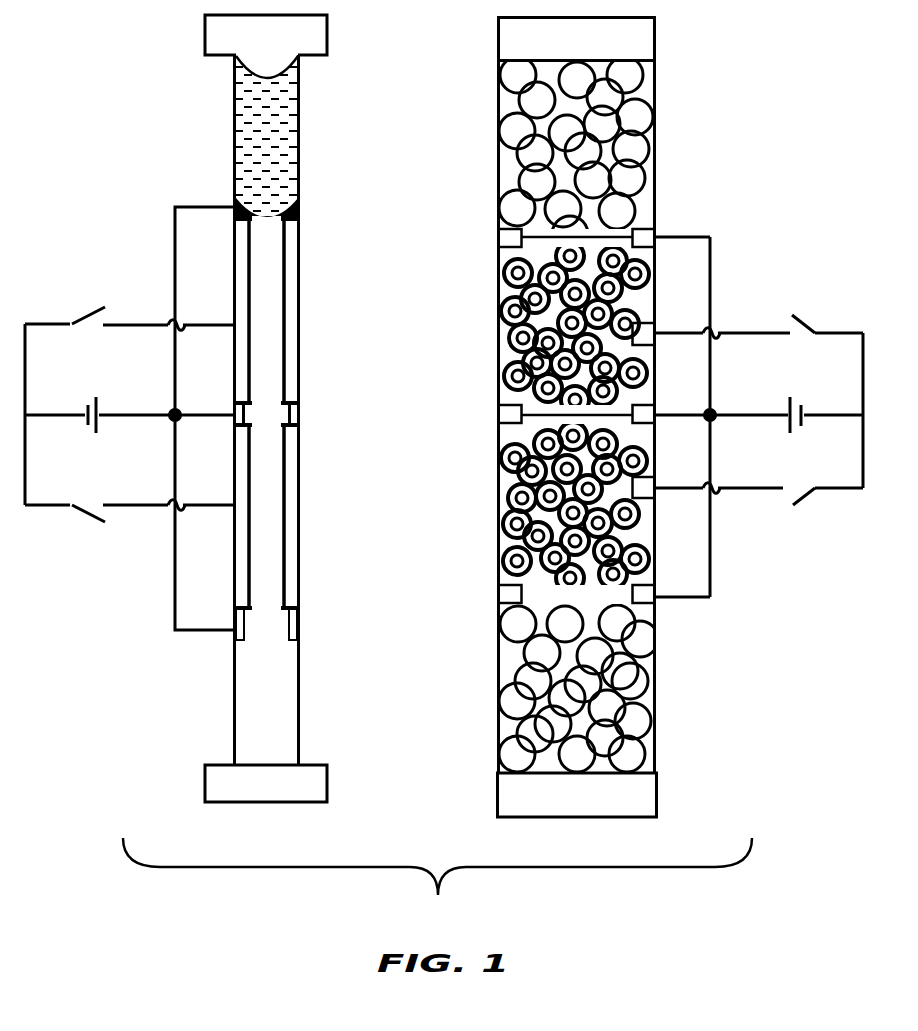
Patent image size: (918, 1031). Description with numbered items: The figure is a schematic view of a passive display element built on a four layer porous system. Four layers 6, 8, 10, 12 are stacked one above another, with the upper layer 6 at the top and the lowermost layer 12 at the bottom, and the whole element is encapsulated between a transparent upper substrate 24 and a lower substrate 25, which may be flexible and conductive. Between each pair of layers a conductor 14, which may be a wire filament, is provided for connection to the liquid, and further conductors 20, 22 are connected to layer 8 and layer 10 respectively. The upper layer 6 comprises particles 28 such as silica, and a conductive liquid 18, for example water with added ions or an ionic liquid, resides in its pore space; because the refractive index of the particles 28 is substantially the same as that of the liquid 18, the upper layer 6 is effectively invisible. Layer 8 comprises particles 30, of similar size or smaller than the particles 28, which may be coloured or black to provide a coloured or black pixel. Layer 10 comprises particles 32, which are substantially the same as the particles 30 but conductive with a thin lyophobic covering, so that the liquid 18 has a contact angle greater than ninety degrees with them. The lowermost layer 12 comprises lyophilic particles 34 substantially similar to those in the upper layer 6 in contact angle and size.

The upper layer 6 is at (302, 112).
The layer 8 is at (302, 300).
The layer 10 is at (302, 505).
The lowermost layer 12 is at (302, 695).
The conductor 14 is at (655, 237).
The liquid 18 is at (245, 136).
The conductor 20 is at (230, 268).
The conductor 22 is at (230, 576).
The upper substrate 24 is at (330, 39).
The bottom end cap 25 is at (328, 781).
The particles 28 is at (508, 74).
The particles 30 is at (500, 254).
The particles 32 is at (500, 430).
The particles 34 is at (512, 627).